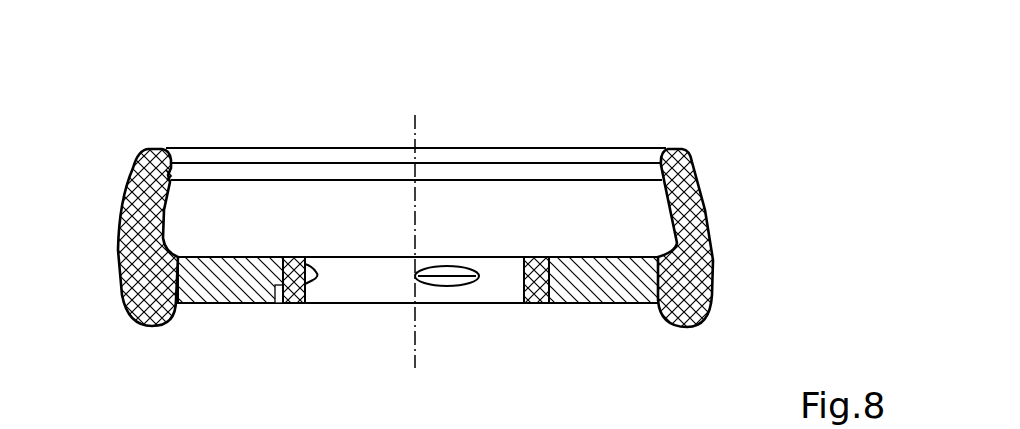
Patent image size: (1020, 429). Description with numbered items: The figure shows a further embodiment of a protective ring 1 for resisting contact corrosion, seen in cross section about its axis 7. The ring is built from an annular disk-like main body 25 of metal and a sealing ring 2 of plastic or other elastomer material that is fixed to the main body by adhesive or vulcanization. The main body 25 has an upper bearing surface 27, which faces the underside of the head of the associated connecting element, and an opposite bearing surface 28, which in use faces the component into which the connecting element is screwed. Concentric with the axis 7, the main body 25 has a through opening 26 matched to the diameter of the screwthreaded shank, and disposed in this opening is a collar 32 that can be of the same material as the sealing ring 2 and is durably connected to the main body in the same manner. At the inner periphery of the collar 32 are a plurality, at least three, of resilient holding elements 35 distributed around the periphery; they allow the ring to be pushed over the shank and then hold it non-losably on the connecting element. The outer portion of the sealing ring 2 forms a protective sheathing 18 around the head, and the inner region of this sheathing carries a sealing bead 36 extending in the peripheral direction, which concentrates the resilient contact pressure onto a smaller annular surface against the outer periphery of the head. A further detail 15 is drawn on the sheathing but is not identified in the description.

The protective ring 1 is at (722, 138).
The sealing ring 2 is at (688, 148).
The axis 7 is at (415, 128).
The bead 15 is at (149, 326).
The protective sheathing 18 is at (142, 156).
The main body 25 is at (603, 285).
The through opening 26 is at (275, 303).
The upper bearing surface 27 is at (243, 256).
The bearing surface 28 is at (225, 303).
The collar 32 is at (538, 302).
The holding elements 35 is at (445, 288).
The sealing bead 36 is at (167, 172).